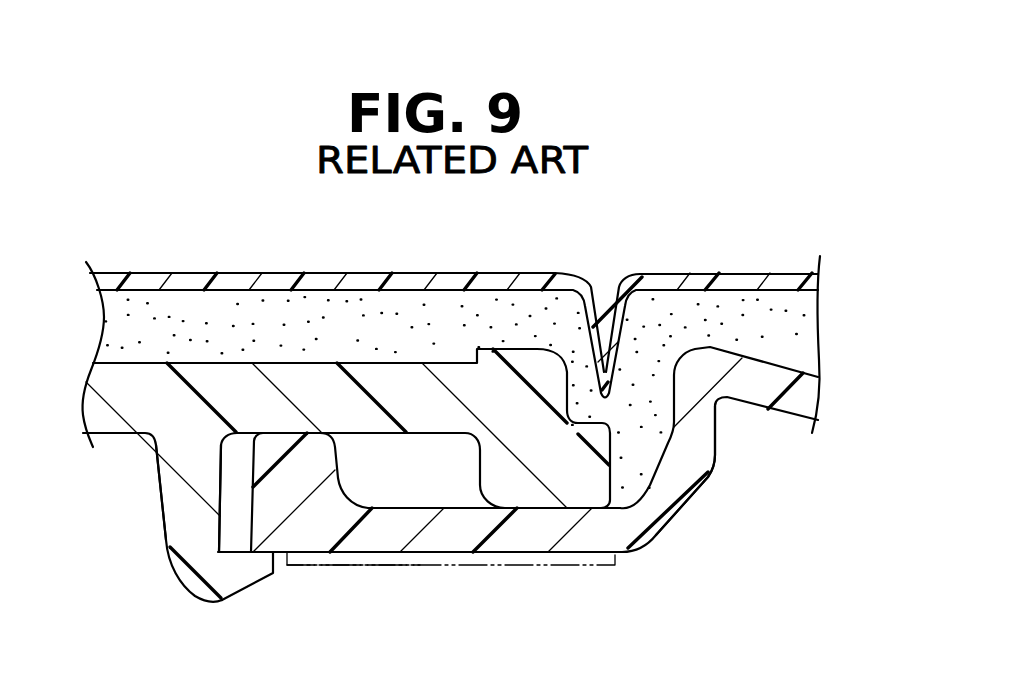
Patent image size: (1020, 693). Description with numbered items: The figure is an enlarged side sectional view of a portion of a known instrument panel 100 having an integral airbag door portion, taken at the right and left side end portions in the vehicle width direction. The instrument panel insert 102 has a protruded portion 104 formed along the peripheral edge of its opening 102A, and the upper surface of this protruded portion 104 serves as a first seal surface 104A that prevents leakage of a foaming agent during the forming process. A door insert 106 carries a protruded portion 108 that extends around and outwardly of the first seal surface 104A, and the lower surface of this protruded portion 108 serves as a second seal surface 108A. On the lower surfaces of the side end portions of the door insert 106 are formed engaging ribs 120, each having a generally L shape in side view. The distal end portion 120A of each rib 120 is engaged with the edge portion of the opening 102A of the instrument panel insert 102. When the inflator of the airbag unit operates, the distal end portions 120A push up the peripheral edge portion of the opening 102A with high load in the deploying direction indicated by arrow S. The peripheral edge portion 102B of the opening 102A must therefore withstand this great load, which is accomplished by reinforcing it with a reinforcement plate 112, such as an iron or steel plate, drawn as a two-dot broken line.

The instrument panel 100 is at (653, 237).
The instrument panel insert 102 is at (677, 533).
The opening 102A is at (223, 598).
The peripheral edge portion 102B is at (366, 567).
The protruded portion 104 is at (252, 498).
The first seal surface 104A is at (310, 432).
The door insert 106 is at (106, 435).
The protruded portion 108 is at (611, 473).
The second seal surface 108A is at (555, 511).
The reinforcement plate 112 is at (428, 567).
The engaging rib 120 is at (160, 531).
The distal end portion 120A is at (270, 575).
The arrow S is at (292, 490).